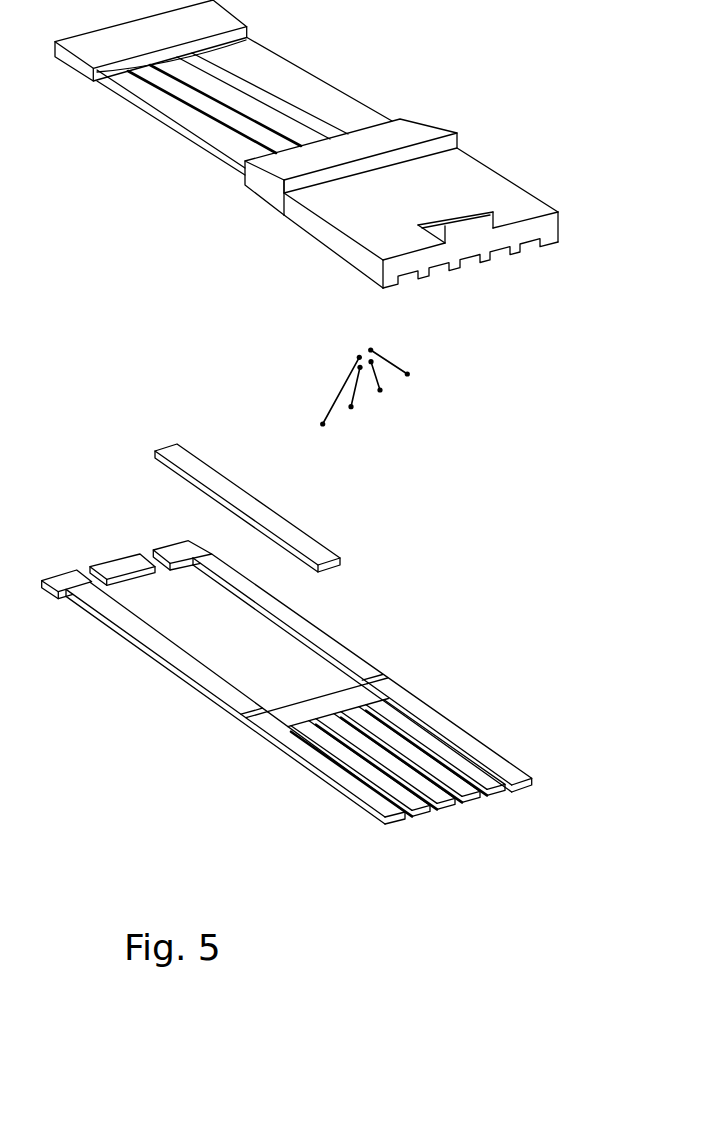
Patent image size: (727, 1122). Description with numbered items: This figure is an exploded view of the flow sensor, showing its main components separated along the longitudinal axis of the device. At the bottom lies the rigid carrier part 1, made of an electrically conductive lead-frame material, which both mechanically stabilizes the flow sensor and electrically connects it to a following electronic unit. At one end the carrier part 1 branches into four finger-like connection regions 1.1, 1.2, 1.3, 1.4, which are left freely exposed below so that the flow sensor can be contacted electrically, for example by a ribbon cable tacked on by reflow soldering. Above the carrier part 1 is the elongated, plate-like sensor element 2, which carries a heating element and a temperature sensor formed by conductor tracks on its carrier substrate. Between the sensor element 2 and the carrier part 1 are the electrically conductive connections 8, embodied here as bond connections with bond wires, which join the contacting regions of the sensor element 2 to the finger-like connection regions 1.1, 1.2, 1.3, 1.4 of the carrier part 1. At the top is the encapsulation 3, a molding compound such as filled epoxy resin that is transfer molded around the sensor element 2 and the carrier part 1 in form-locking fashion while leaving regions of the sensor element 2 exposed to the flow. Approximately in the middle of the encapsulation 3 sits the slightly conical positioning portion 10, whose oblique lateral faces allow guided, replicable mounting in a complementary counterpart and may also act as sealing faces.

The carrier part 1 is at (386, 691).
The finger-like connection region 1.1 is at (426, 813).
The finger-like connection region 1.2 is at (451, 803).
The finger-like connection region 1.3 is at (477, 798).
The finger-like connection region 1.4 is at (508, 793).
The sensor element 2 is at (318, 547).
The encapsulation 3 is at (478, 173).
The electrically conductive connection 8 is at (407, 374).
The positioning portion 10 is at (422, 137).